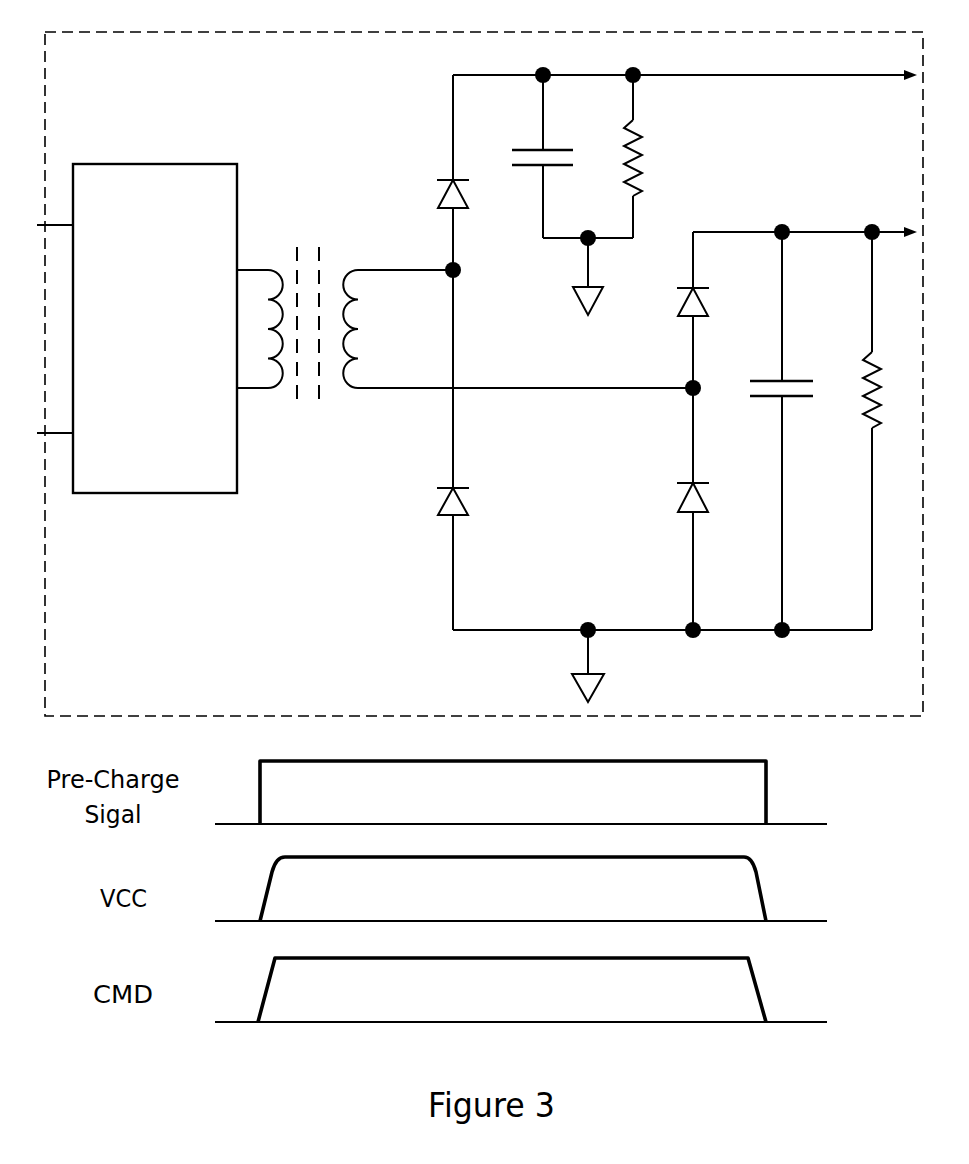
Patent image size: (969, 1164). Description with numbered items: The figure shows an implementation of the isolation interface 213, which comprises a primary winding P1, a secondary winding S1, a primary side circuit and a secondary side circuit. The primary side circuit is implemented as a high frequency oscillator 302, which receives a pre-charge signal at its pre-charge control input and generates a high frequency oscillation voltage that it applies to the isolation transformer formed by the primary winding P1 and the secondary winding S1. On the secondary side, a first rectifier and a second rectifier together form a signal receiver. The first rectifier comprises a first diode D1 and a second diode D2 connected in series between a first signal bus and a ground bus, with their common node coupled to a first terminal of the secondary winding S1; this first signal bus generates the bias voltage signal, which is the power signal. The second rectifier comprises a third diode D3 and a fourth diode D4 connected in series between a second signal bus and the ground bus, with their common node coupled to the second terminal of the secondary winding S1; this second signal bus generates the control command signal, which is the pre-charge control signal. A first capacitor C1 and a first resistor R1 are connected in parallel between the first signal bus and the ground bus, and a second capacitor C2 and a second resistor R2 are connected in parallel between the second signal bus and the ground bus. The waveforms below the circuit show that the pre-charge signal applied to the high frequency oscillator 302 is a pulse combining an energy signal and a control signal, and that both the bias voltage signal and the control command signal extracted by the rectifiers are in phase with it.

The isolation interface 213 is at (325, 676).
The high frequency oscillator 302 is at (135, 404).
The primary winding P1 is at (260, 314).
The secondary winding S1 is at (518, 314).
The first diode D1 is at (434, 194).
The second diode D2 is at (426, 503).
The third diode D3 is at (672, 302).
The fourth diode D4 is at (671, 500).
The first capacitor C1 is at (533, 143).
The second capacitor C2 is at (778, 373).
The first resistor R1 is at (656, 158).
The second resistor R2 is at (892, 390).